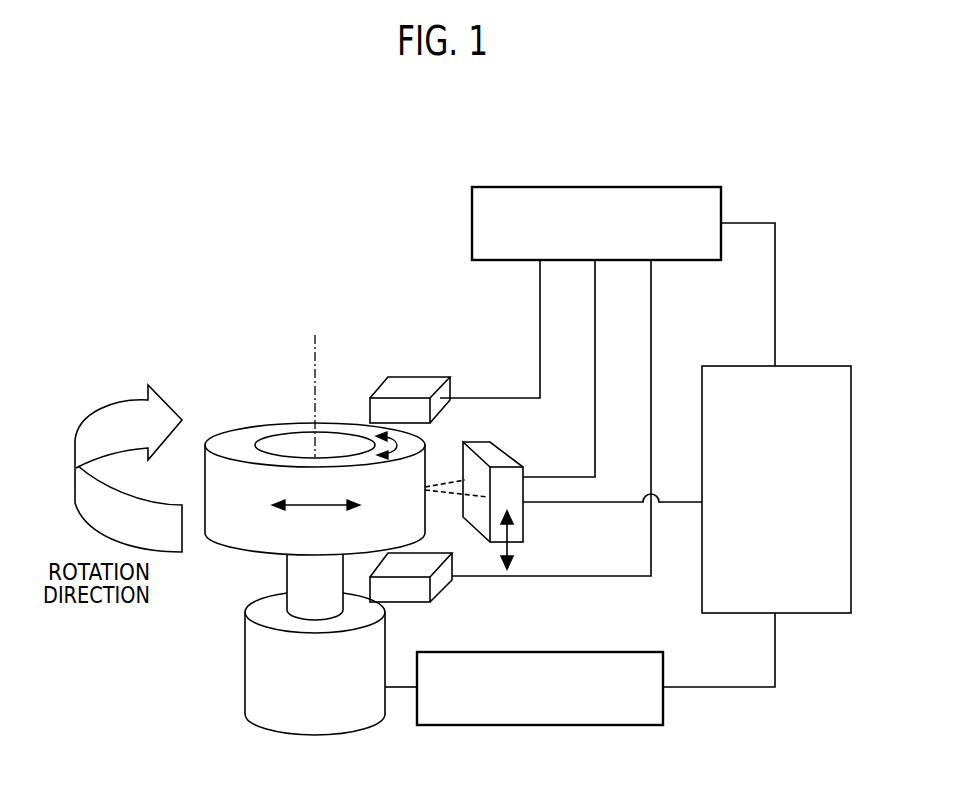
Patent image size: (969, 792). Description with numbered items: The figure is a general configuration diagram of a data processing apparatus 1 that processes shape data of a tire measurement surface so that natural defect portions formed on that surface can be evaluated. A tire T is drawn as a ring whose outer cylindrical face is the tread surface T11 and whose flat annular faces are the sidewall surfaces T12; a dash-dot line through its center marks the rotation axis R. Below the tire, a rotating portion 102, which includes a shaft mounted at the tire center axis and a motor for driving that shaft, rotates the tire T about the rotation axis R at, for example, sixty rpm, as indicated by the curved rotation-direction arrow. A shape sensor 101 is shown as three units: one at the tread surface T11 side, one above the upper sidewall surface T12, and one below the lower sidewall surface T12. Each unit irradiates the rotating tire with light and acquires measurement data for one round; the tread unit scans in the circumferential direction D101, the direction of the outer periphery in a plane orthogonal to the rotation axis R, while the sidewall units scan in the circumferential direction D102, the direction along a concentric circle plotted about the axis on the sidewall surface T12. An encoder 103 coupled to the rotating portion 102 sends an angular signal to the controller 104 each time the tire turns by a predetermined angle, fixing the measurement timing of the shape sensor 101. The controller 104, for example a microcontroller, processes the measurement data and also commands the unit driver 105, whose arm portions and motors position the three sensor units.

The data processing apparatus 1 is at (777, 147).
The shape sensor 101 is at (410, 377).
The rotating portion 102 is at (255, 677).
The encoder 103 is at (663, 703).
The controller 104 is at (795, 366).
The unit driver 105 is at (607, 187).
The tire T is at (235, 420).
The tread surface T11 is at (225, 528).
The sidewall surface T12 is at (245, 437).
The rotation axis R is at (316, 382).
The circumferential direction D101 is at (316, 517).
The circumferential direction D102 is at (398, 452).